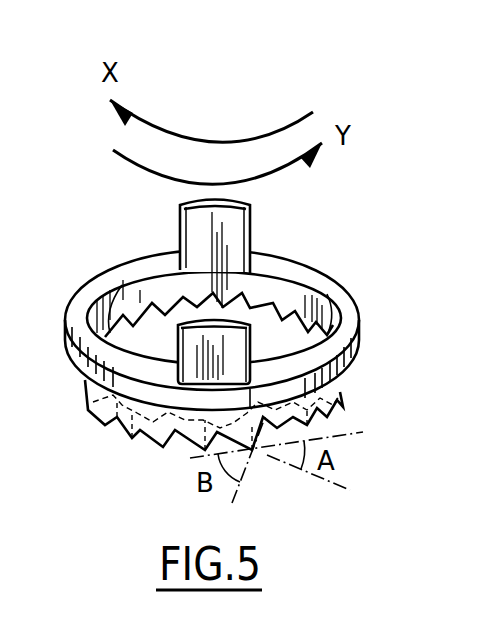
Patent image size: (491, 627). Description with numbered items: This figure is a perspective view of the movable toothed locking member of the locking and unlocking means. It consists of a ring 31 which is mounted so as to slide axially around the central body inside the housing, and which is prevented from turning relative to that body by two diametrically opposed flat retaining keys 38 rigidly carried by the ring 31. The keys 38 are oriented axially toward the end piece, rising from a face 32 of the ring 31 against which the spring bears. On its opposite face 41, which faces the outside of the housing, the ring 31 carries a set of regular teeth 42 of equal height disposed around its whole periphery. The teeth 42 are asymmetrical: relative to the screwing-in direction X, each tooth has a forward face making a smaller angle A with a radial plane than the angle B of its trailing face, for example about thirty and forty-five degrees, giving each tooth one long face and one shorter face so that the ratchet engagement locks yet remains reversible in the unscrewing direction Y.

The ring 31 is at (363, 325).
The face of the ring 32 is at (125, 275).
The flat retaining keys 38 is at (230, 343).
The face of the ring facing the outside of the housing 41 is at (350, 373).
The set of teeth 42 is at (95, 415).